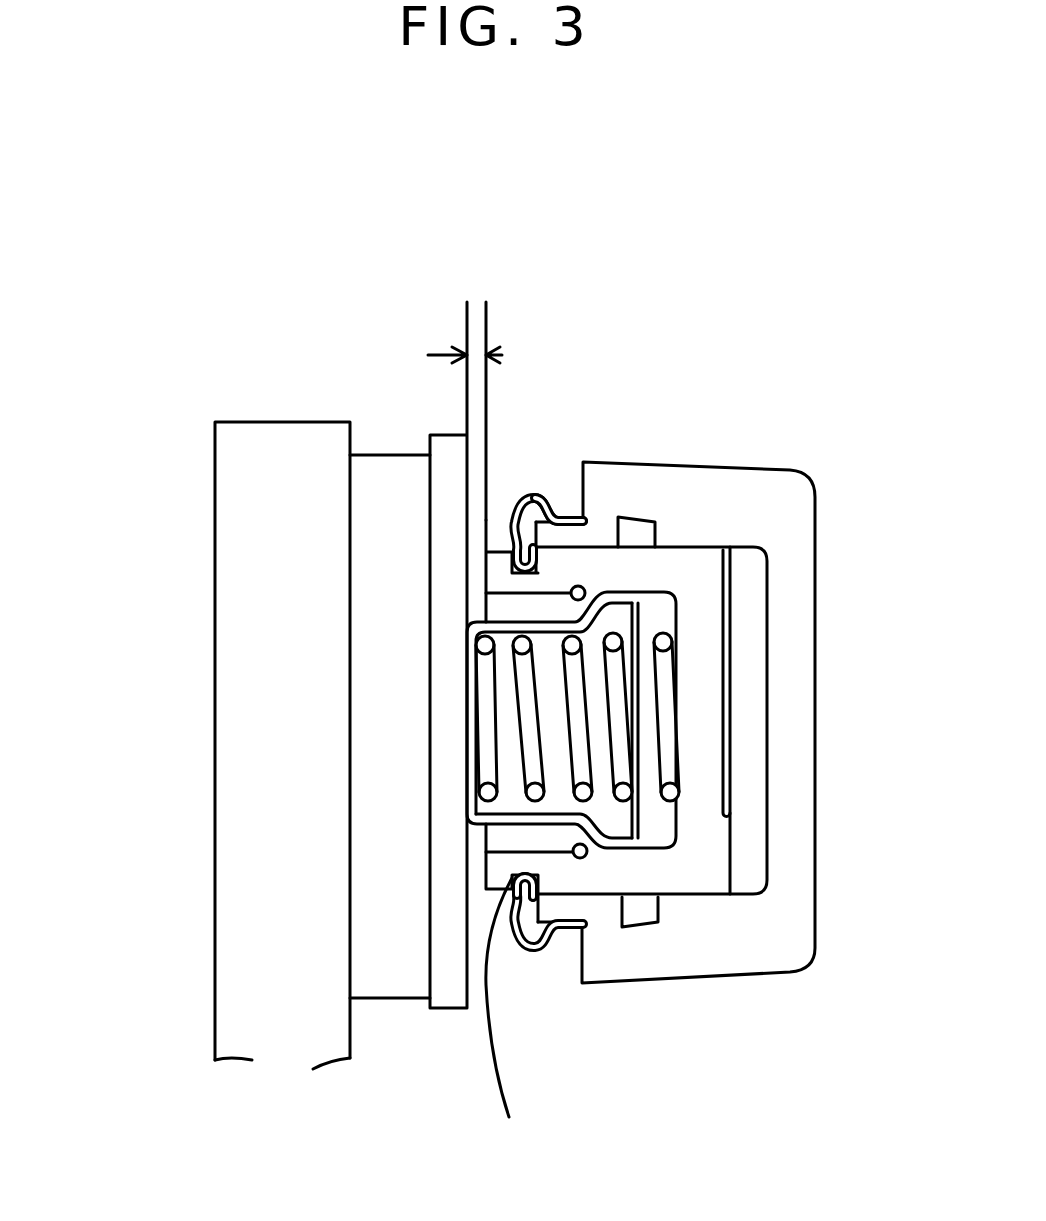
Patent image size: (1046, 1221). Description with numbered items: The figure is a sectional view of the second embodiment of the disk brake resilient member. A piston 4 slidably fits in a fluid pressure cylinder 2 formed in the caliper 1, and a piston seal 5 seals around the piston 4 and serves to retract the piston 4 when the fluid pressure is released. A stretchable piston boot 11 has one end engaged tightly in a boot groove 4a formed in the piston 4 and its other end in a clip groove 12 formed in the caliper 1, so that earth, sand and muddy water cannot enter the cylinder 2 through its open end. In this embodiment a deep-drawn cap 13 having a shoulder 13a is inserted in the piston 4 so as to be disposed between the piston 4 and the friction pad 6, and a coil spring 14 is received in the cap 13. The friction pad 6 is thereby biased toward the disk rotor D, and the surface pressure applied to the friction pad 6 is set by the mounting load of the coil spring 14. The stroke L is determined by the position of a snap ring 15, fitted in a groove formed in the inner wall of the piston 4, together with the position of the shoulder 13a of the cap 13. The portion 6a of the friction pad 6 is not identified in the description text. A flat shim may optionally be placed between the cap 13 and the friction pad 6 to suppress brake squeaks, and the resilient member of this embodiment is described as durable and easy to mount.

The caliper 1 is at (808, 738).
The fluid pressure cylinder 2 is at (742, 550).
The piston 4 is at (700, 857).
The boot groove 4a is at (515, 1022).
The piston seal 5 is at (645, 533).
The friction pad 6 is at (387, 503).
The bracket wall portion 6a is at (455, 993).
The piston boot 11 is at (537, 493).
The clip groove 12 is at (557, 505).
The deep-drawn cap 13 is at (623, 843).
The shoulder 13a is at (573, 856).
The coil spring 14 is at (663, 697).
The snap ring 15 is at (580, 588).
The disk rotor D is at (244, 612).
The stroke L is at (500, 411).